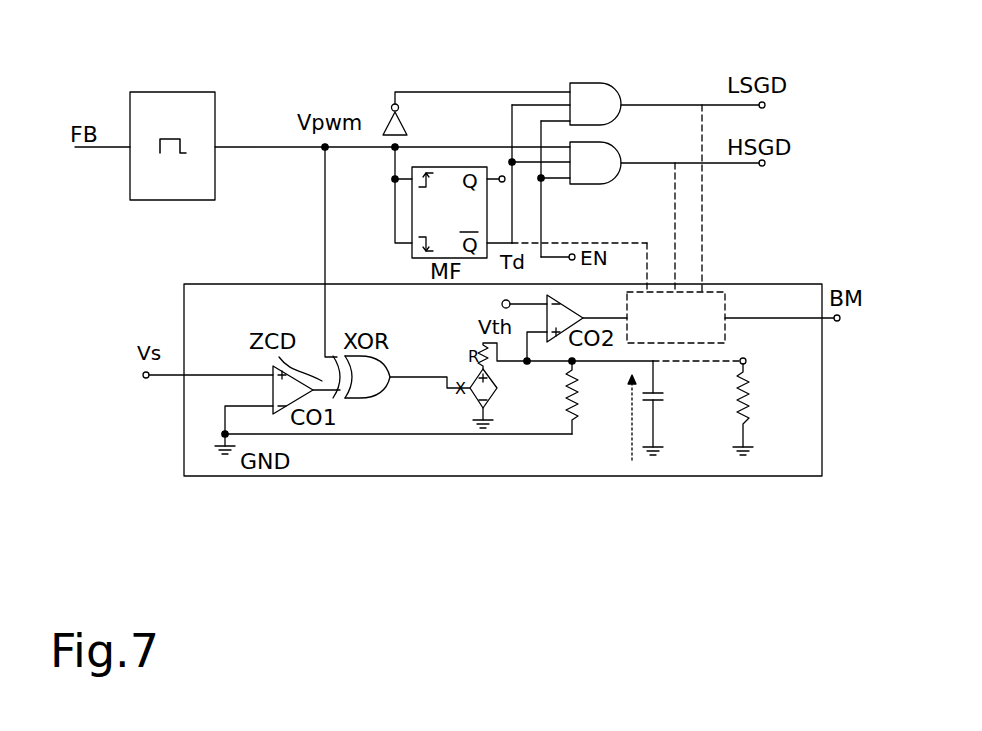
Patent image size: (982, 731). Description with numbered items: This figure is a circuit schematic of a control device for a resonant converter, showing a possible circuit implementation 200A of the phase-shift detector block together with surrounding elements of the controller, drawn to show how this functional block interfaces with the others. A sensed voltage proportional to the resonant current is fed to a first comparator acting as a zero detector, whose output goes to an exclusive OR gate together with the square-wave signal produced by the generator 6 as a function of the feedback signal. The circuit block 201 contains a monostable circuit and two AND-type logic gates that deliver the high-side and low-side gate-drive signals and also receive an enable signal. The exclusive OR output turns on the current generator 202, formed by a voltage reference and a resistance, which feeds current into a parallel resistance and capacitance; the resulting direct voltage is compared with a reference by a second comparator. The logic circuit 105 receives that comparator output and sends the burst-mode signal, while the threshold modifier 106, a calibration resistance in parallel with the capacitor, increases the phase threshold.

The generator 6 is at (187, 92).
The circuit block 201 is at (588, 68).
The logic circuit 105 is at (712, 292).
The current generator 202 is at (492, 400).
The circuit implementation of the circuit block 200A is at (529, 478).
The threshold modifier 106 is at (776, 462).